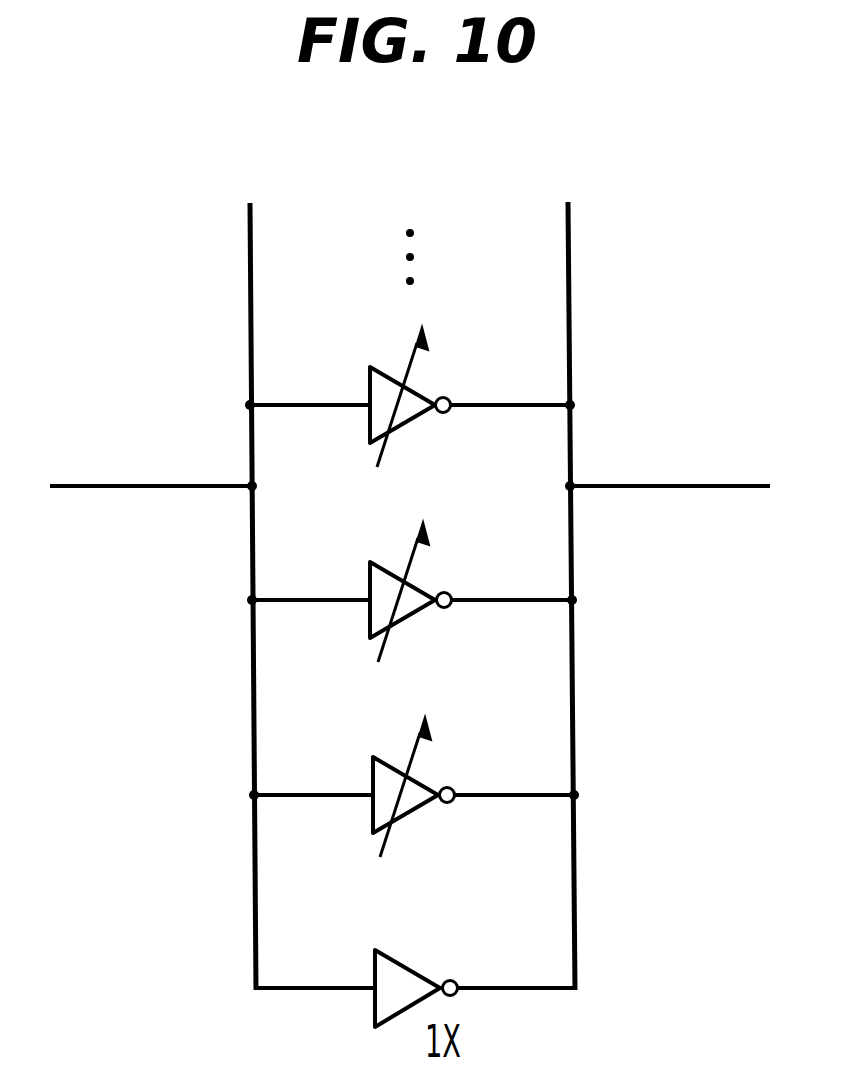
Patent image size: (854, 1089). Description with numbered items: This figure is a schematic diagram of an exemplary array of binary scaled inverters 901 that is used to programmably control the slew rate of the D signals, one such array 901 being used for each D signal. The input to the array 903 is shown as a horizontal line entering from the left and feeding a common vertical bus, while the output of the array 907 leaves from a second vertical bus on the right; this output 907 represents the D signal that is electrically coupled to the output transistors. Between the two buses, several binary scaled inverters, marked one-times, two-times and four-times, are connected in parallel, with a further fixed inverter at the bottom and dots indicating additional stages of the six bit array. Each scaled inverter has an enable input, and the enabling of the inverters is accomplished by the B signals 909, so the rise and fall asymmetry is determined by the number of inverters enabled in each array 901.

The array of binary scaled inverters 901 is at (253, 945).
The input to the array 903 is at (146, 486).
The output of the array 907 is at (668, 484).
The B signals 909 is at (432, 398).